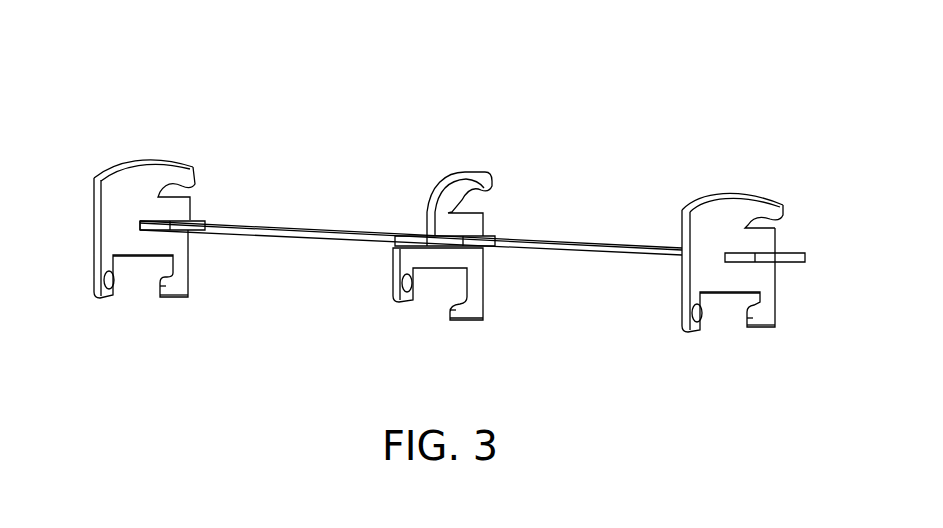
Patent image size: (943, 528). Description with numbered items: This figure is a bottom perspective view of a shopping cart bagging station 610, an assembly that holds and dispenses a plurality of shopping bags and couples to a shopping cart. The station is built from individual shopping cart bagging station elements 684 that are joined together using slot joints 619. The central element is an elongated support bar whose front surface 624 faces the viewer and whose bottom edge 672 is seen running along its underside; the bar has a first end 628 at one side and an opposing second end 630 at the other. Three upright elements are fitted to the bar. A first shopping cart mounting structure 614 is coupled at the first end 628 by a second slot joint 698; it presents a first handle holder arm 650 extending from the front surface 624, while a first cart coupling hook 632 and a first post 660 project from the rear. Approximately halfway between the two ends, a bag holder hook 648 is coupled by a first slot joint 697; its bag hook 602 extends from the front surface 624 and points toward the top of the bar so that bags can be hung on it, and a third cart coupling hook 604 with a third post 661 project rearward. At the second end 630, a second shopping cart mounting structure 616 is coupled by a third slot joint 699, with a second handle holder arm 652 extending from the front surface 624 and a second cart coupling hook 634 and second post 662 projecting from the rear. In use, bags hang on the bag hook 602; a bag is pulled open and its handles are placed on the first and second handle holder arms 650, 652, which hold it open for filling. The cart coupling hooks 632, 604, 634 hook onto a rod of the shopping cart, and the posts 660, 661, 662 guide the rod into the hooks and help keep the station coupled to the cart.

The shopping cart bagging station 610 is at (486, 80).
The shopping cart bagging station elements 684 is at (177, 232).
The first shopping cart mounting structure 614 is at (137, 175).
The first handle holder arm 650 is at (193, 180).
The second slot joint 698 is at (198, 214).
The bag holder hook 648 is at (431, 221).
The bag hook 602 is at (466, 182).
The first slot joint 697 is at (502, 220).
The front surface 624 is at (618, 246).
The bottom edge 672 is at (580, 251).
The second shopping cart mounting structure 616 is at (737, 207).
The second handle holder arm 652 is at (780, 204).
The third slot joint 699 is at (786, 246).
The first post 660 is at (108, 292).
The first end 628 is at (138, 310).
The first cart coupling hook 632 is at (178, 297).
The third post 661 is at (401, 302).
The third cart coupling hook 604 is at (463, 318).
The second post 662 is at (694, 332).
The second cart coupling hook 634 is at (756, 328).
The second end 630 is at (710, 373).
The slot joints 619 is at (748, 287).